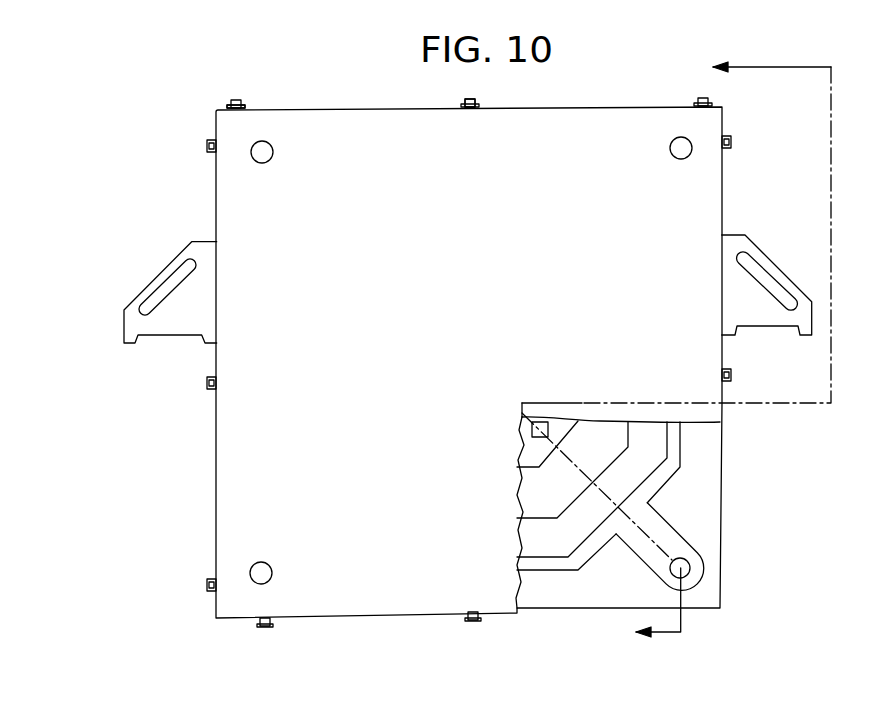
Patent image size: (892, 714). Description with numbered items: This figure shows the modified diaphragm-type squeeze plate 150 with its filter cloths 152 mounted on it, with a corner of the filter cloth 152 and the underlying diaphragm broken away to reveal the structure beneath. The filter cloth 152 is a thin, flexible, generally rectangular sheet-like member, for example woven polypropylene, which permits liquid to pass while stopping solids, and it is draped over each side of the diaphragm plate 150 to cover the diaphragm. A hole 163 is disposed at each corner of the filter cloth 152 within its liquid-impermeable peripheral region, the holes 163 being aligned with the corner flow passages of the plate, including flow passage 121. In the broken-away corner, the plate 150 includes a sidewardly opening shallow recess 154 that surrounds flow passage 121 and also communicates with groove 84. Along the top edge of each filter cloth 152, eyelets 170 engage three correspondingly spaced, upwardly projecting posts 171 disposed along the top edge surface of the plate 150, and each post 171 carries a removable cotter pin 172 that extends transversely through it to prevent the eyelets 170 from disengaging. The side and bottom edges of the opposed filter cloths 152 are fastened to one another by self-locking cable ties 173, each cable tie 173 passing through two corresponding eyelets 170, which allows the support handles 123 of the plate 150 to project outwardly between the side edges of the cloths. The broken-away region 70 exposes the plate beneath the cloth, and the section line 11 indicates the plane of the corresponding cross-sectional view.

The section line 11- 11 is at (706, 340).
The cutaway region of panel 70 is at (590, 590).
The groove 84 is at (672, 443).
The flow passage 121 is at (688, 562).
The support handle 123 is at (136, 298).
The diaphragm squeeze plate 150 is at (145, 132).
The filter cloth 152 is at (225, 203).
The shallow recess 154 is at (663, 530).
The hole 163 is at (262, 148).
The eyelet 170 is at (465, 103).
The post 171 is at (238, 100).
The cotter pin 172 is at (228, 106).
The cable tie 173 is at (207, 147).